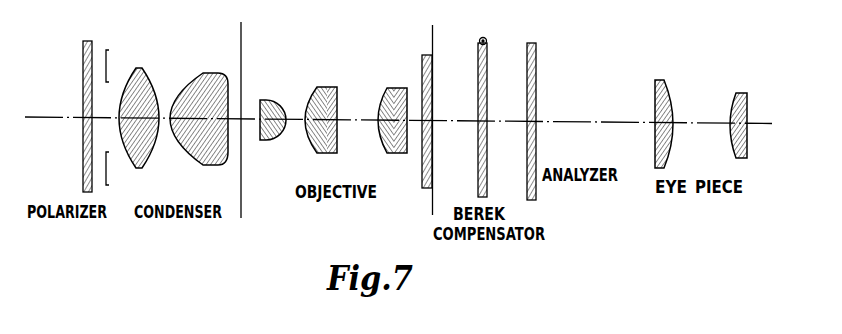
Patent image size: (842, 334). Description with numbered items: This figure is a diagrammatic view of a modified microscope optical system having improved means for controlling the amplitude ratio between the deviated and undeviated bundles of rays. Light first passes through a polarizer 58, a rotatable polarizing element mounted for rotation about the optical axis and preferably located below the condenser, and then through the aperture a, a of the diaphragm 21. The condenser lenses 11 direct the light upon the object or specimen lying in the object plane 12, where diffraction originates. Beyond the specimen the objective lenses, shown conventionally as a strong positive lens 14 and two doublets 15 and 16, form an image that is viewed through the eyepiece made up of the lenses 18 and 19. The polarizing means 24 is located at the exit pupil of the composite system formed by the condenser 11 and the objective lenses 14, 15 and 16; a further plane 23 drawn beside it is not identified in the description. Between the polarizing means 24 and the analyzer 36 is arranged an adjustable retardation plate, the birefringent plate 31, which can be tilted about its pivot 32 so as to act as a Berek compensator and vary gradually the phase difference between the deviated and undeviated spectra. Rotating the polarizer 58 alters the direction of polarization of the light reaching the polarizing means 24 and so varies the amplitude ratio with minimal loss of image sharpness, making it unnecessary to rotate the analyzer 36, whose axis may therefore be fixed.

The polarizer 58 is at (88, 41).
The diaphragm 21 is at (108, 50).
The condenser lenses 11 is at (152, 90).
The object plane 12 is at (243, 32).
The strong positive lens 14 is at (270, 100).
The doublet 15 is at (325, 87).
The doublet 16 is at (386, 90).
The polarizing means 24 is at (424, 55).
The image plane 23 is at (434, 34).
The birefringent plate 31 is at (479, 63).
The pivot 32 is at (486, 39).
The analyzer 36 is at (537, 46).
The eyepiece lens 19 is at (666, 81).
The eyepiece lens 18 is at (745, 94).